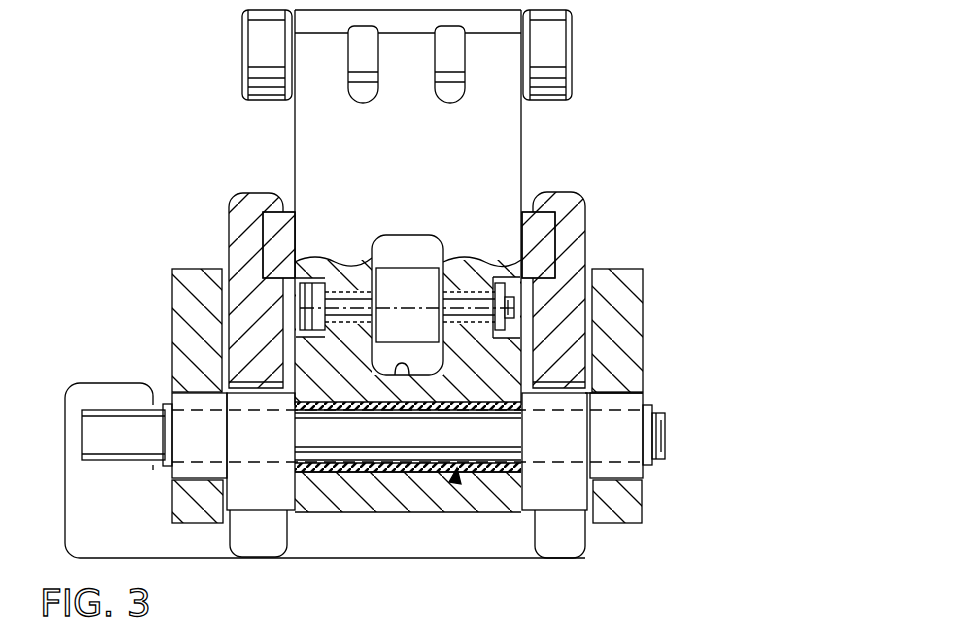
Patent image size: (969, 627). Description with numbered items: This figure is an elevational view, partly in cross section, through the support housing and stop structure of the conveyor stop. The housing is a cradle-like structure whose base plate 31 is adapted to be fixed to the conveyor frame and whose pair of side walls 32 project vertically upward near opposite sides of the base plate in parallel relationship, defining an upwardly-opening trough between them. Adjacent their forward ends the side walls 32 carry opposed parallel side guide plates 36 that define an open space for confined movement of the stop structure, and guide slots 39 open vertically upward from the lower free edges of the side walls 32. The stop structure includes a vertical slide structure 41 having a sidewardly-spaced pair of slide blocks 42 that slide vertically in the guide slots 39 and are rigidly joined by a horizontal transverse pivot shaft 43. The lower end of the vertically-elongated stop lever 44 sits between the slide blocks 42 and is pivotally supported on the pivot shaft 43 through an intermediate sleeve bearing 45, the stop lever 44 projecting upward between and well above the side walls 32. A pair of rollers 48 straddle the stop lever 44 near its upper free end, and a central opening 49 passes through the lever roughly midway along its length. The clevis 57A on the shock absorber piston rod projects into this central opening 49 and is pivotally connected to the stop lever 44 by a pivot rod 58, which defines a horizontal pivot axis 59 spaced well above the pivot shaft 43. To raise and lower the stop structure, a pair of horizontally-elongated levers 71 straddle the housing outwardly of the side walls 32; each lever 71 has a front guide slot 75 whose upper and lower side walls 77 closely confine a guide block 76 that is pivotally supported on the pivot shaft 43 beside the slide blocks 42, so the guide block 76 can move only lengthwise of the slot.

The base plate 31 is at (412, 503).
The side walls 32 is at (242, 255).
The side guide plates 36 is at (268, 227).
The guide slots 39 is at (600, 398).
The vertical slide structure 41 is at (457, 470).
The slide blocks 42 is at (257, 497).
The pivot shaft 43 is at (352, 440).
The stop lever 44 is at (502, 147).
The sleeve bearing 45 is at (482, 468).
The rollers 48 is at (262, 45).
The central opening 49 is at (404, 376).
The clevis 57A is at (398, 275).
The pivot rod 58 is at (463, 297).
The pivot axis 59 is at (427, 305).
The levers 71 is at (188, 329).
The guide slot 75 is at (193, 477).
The guide block 76 is at (190, 437).
The side walls of guide slot 77 is at (642, 474).